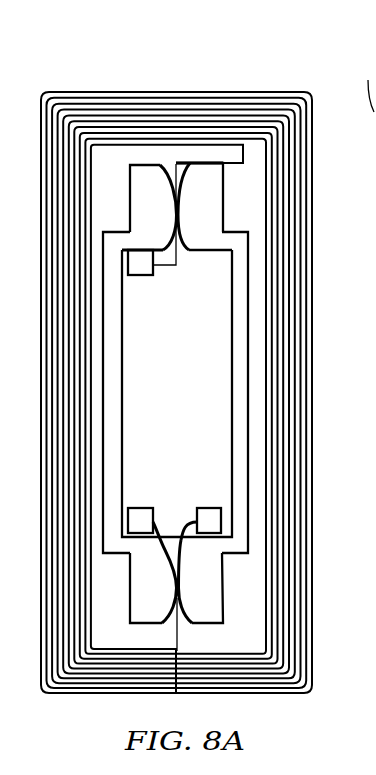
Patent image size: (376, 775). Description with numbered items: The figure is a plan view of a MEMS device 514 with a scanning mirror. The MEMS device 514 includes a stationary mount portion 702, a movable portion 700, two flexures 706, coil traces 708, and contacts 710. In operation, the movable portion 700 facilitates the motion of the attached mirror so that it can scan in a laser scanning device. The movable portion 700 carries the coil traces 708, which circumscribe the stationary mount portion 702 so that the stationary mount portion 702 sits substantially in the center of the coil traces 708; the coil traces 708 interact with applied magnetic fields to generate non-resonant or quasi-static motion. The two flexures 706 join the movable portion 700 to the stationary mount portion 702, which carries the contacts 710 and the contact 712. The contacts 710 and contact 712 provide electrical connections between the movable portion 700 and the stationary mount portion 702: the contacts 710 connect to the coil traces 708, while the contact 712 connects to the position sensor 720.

The movable portion 700 is at (205, 365).
The stationary mount portion 702 is at (190, 383).
The flexure 706 is at (173, 212).
The coil traces 708 is at (305, 247).
The contacts 710 is at (142, 277).
The contact 712 is at (203, 507).
The position sensor 720 is at (178, 544).
The MEMS device 514 is at (365, 81).